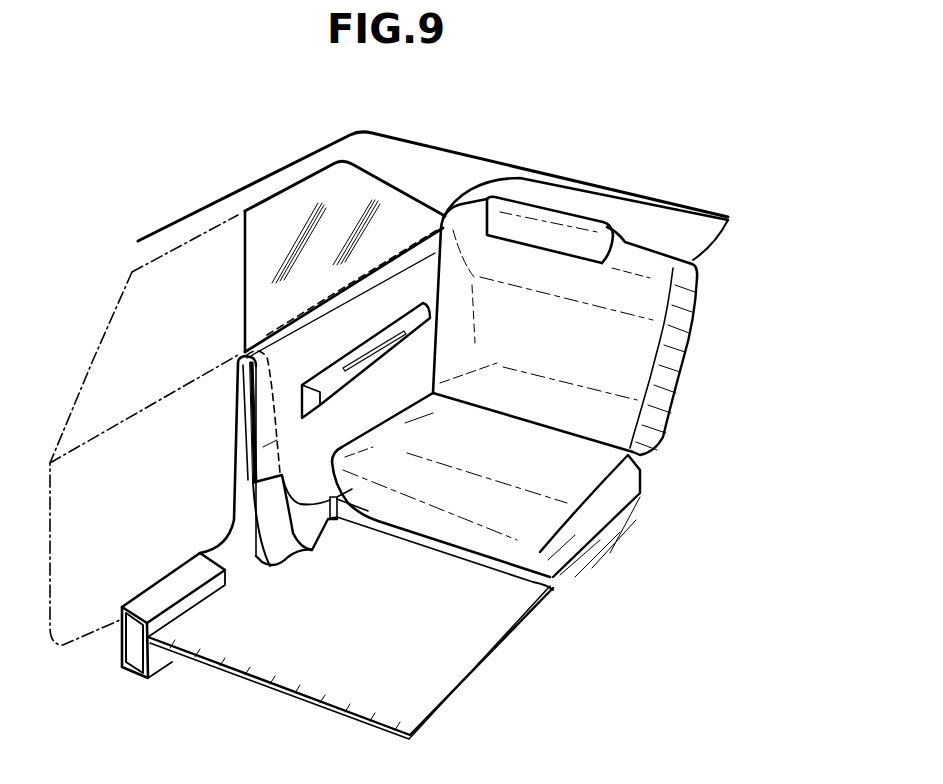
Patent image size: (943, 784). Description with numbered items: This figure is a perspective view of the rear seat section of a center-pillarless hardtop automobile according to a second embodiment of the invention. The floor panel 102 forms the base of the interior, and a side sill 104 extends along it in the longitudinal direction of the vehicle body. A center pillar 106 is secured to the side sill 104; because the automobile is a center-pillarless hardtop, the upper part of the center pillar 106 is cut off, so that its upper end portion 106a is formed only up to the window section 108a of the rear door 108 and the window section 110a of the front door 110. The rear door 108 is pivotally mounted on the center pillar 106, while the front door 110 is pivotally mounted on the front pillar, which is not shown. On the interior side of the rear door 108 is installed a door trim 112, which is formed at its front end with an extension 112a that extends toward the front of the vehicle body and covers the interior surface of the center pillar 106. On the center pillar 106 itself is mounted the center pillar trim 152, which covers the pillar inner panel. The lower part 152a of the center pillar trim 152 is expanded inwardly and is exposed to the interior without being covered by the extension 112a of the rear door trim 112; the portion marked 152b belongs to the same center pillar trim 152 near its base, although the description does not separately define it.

The floor panel 102 is at (485, 640).
The side sill 104 is at (155, 582).
The center pillar 106 is at (246, 495).
The upper end portion of the center pillar 106a is at (246, 417).
The rear door 108 is at (276, 341).
The window section of the rear door 108a is at (291, 196).
The front door 110 is at (87, 370).
The window section of the front door 110a is at (107, 418).
The door trim 112 is at (370, 413).
The extension 112a is at (263, 447).
The center pillar trim 152 is at (243, 477).
The lower part of the center pillar trim 152a is at (242, 392).
The pillar trim lower portion 152b is at (312, 551).